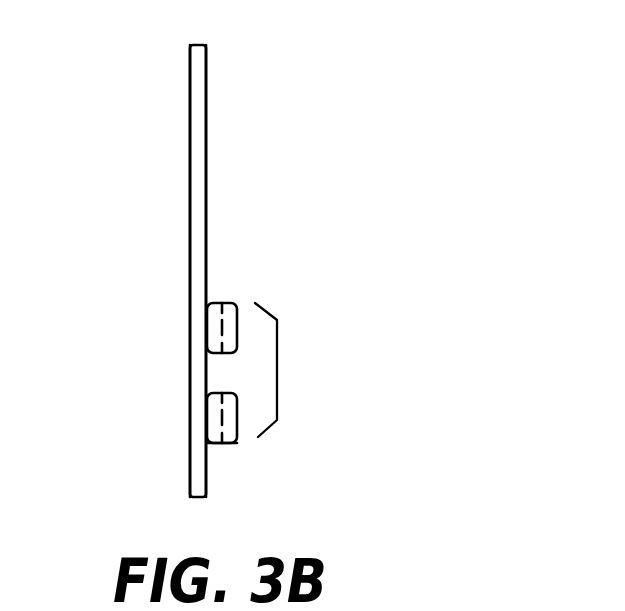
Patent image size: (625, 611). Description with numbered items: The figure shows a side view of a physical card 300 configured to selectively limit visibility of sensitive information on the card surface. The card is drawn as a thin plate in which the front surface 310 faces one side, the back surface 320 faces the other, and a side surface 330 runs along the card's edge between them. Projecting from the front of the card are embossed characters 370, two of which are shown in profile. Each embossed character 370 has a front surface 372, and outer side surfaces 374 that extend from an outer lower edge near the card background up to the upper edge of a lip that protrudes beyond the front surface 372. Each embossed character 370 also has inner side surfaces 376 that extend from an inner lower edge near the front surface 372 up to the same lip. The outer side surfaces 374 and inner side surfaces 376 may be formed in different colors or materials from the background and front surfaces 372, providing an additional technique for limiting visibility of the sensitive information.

The physical card 300 is at (338, 83).
The front surface 310 is at (206, 213).
The back surface 320 is at (190, 193).
The side surface 330 is at (197, 123).
The embossed characters 370 is at (276, 367).
The front surfaces of embossed characters 372 is at (219, 414).
The outer side surfaces 374 is at (213, 443).
The inner side surfaces 376 is at (236, 305).